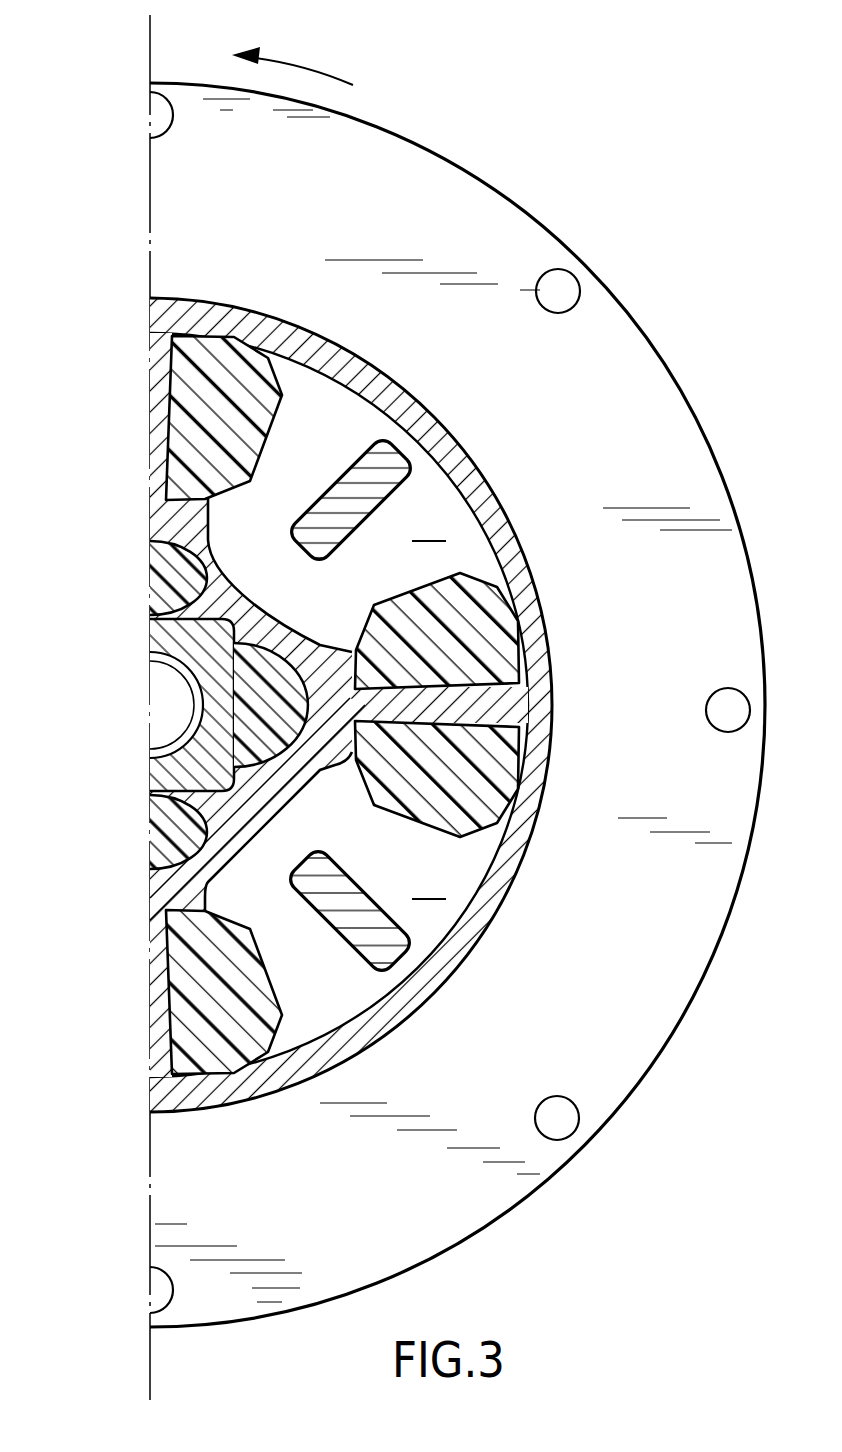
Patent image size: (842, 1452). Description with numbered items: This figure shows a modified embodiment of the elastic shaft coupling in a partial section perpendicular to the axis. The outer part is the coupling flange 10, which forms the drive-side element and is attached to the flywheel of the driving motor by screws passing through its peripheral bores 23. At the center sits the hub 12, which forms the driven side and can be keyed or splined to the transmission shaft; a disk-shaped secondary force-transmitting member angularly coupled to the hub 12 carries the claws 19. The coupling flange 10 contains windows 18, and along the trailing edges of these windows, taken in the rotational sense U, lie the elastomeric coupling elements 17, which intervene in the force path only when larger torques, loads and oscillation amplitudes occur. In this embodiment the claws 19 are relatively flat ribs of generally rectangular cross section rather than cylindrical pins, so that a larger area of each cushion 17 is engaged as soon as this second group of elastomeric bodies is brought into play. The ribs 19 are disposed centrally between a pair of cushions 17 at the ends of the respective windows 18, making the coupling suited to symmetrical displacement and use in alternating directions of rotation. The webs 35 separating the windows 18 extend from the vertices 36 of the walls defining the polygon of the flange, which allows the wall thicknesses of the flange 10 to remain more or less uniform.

The coupling flange 10 is at (463, 183).
The hub 12 is at (165, 772).
The elastomeric coupling elements 17 is at (233, 370).
The windows 18 is at (429, 704).
The claws 19 is at (367, 460).
The peripheral bores 23 is at (578, 292).
The webs 35 is at (157, 962).
The vertices 36 is at (172, 876).
The rotational sense U is at (313, 70).